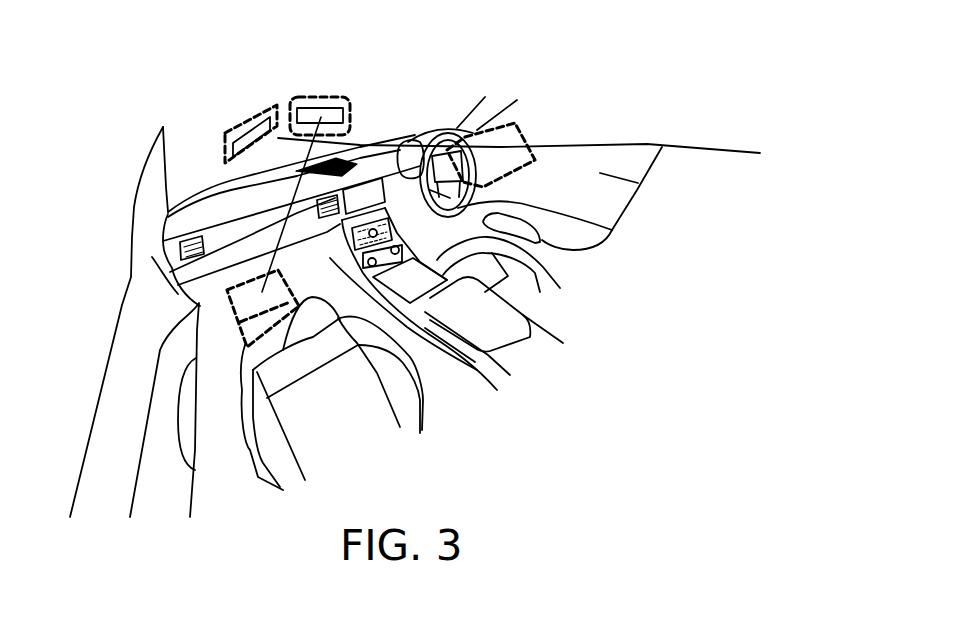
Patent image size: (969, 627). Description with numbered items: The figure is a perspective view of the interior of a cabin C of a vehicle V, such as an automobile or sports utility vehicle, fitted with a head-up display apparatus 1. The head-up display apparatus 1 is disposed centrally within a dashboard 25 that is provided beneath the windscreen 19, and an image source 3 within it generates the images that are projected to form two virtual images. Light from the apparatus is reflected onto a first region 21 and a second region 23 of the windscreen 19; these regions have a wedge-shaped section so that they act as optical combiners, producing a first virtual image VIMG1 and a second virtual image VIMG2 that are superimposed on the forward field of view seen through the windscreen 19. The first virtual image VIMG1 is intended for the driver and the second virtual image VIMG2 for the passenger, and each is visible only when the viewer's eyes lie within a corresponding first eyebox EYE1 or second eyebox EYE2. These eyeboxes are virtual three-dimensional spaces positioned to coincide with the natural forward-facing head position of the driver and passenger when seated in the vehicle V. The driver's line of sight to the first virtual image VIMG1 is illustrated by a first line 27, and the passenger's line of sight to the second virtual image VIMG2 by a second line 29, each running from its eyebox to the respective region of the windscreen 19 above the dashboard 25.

The head-up display apparatus 1 is at (407, 90).
The image source 3 is at (325, 170).
The windscreen 19 is at (183, 172).
The first region 21 is at (225, 133).
The second region 23 is at (348, 98).
The dashboard 25 is at (205, 213).
The first line 27 is at (360, 145).
The second line 29 is at (273, 252).
The first virtual image VIMG1 is at (253, 133).
The second virtual image VIMG2 is at (316, 112).
The first eyebox EYE1 is at (512, 133).
The second eyebox EYE2 is at (242, 311).
The vehicle V is at (697, 73).
The cabin C is at (600, 387).